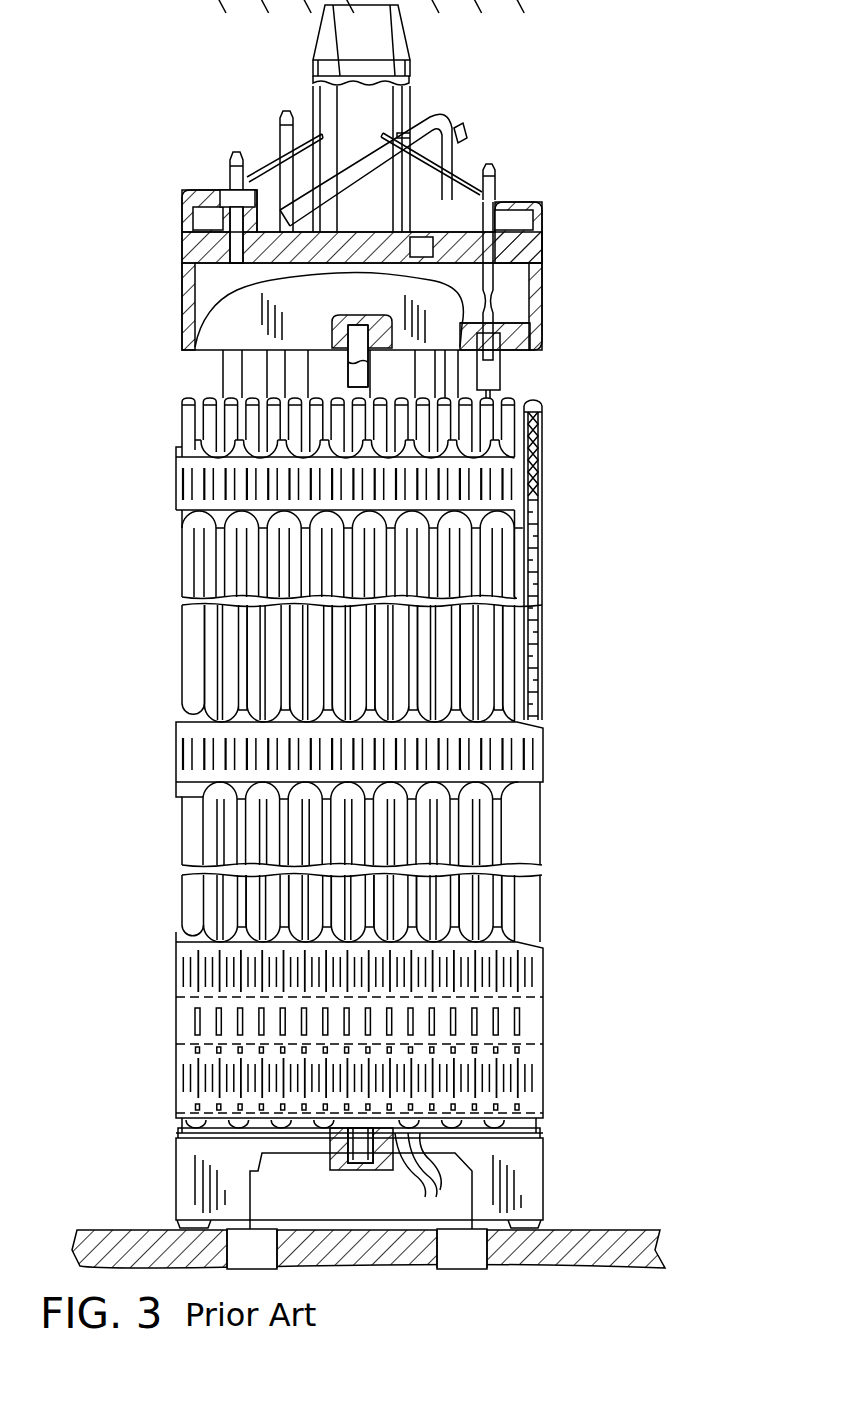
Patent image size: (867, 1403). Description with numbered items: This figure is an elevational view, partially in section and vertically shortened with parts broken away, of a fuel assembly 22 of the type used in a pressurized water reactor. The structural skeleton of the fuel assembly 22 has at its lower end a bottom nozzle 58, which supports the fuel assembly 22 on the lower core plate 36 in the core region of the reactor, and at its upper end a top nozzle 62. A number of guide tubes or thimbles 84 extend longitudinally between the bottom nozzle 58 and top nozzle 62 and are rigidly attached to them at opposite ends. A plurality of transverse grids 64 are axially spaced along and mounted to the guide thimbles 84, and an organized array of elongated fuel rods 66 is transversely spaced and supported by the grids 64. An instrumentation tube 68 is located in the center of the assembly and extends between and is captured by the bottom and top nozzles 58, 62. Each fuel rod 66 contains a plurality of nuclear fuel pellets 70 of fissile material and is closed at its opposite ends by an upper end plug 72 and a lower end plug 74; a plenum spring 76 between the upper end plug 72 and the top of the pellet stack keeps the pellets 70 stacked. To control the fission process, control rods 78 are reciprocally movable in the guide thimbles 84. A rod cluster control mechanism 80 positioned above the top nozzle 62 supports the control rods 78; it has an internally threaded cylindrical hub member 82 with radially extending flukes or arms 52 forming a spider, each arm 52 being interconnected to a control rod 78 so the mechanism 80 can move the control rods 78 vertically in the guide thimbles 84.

The fuel assembly 22 is at (628, 262).
The lower core plate 36 is at (582, 1232).
The flukes or arms 52 is at (308, 140).
The bottom nozzle 58 is at (548, 1172).
The top nozzle 62 is at (545, 246).
The transverse grids 64 is at (178, 492).
The fuel rods 66 is at (178, 658).
The instrumentation tube 68 is at (365, 1170).
The nuclear fuel pellets 70 is at (548, 555).
The upper end plug 72 is at (545, 408).
The lower end plug 74 is at (430, 1172).
The plenum spring 76 is at (548, 465).
The control rods 78 is at (545, 320).
The rod cluster control mechanism 80 is at (453, 113).
The cylindrical hub member 82 is at (410, 103).
The guide tubes or thimbles 84 is at (212, 384).